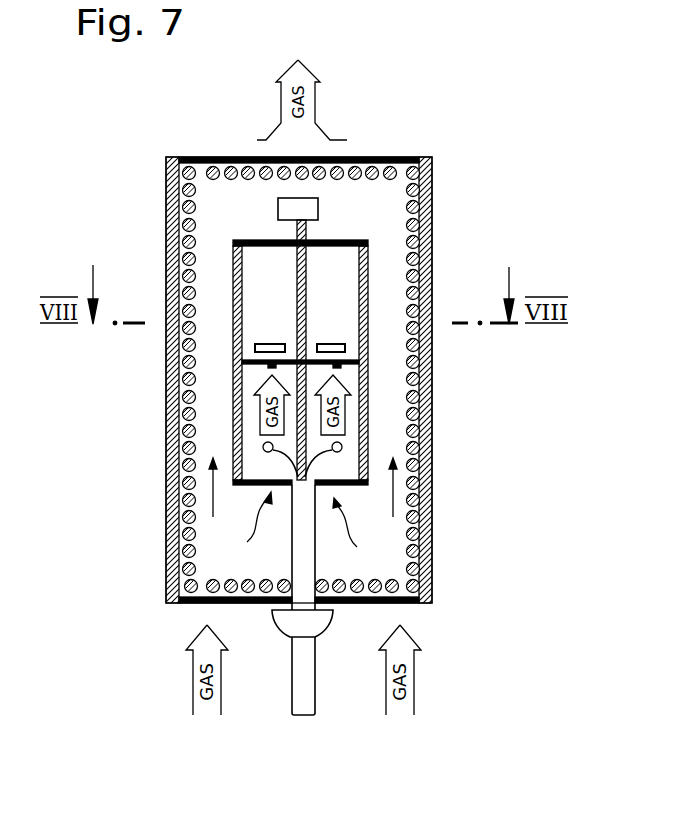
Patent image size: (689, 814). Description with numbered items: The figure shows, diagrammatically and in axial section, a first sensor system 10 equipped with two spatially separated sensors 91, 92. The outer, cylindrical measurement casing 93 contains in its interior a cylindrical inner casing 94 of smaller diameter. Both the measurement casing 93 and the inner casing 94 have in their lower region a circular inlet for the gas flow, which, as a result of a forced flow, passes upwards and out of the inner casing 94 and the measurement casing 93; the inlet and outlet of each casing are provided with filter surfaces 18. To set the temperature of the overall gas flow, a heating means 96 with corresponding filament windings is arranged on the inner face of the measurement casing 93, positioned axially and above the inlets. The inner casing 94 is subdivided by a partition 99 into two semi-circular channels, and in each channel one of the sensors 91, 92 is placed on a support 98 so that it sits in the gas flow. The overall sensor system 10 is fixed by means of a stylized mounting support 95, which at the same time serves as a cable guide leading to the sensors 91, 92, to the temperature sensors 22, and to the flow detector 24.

The sensor system 10 is at (460, 135).
The filter surfaces 18 is at (218, 157).
The temperature sensors 22 is at (264, 446).
The flow detector 24 is at (310, 203).
The sensor 91 is at (268, 343).
The sensor 92 is at (330, 343).
The measurement casing 93 is at (166, 203).
The inner casing 94 is at (365, 275).
The mounting support 95 is at (305, 692).
The heating means 96 is at (180, 385).
The support 98 is at (366, 362).
The partition 99 is at (296, 266).